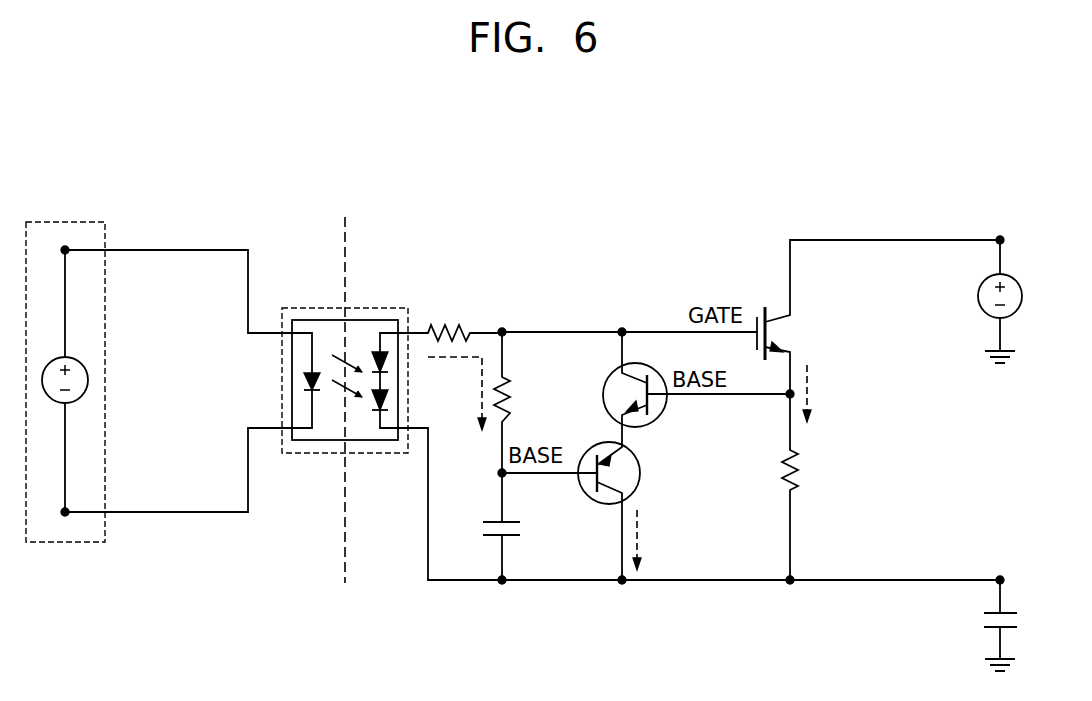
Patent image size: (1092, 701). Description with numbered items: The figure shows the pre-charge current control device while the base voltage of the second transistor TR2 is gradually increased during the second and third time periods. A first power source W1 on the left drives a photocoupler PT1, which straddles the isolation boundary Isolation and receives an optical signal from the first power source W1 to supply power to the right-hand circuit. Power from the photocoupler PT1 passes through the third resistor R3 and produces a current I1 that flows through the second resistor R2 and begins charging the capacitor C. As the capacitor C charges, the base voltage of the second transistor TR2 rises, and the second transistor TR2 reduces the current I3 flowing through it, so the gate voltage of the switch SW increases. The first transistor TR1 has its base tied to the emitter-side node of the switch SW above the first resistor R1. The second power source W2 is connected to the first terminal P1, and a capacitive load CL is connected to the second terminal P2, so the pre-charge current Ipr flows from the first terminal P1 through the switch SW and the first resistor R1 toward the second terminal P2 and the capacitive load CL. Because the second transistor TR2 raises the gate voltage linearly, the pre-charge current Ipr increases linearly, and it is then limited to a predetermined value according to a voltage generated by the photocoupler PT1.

The first power source W1 is at (68, 221).
The isolation boundary Isolation is at (347, 386).
The photocoupler PT1 is at (357, 309).
The third resistor R3 is at (450, 319).
The current I1 is at (457, 393).
The second resistor R2 is at (520, 400).
The capacitor C is at (512, 526).
The first transistor TR1 is at (643, 385).
The second transistor TR2 is at (595, 513).
The current I3 is at (649, 540).
The switch SW is at (878, 319).
The pre-charge current Ipr is at (823, 393).
The first resistor R1 is at (809, 489).
The first terminal P1 is at (1018, 240).
The second power source W2 is at (1021, 301).
The second terminal P2 is at (1018, 581).
The capacitive load CL is at (1017, 625).